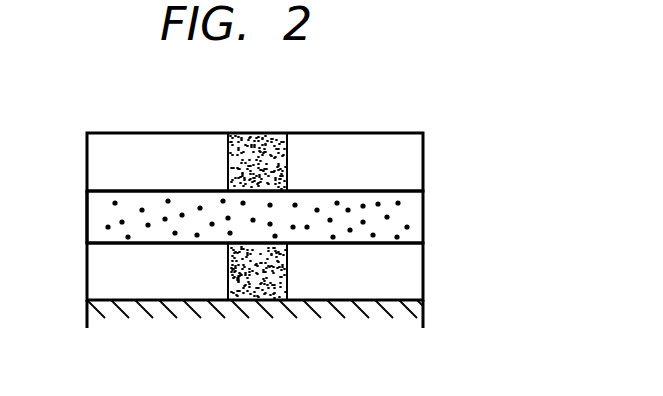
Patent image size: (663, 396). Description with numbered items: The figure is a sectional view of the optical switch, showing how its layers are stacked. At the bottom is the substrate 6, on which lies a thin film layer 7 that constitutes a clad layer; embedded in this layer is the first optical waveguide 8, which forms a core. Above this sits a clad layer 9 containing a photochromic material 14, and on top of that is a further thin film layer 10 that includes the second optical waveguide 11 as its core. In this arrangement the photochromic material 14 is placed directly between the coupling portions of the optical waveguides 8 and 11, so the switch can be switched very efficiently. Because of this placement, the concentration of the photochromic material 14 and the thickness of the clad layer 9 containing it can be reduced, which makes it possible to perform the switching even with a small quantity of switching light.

The substrate 6 is at (395, 308).
The thin film layer 7 is at (408, 278).
The first optical waveguide 8 is at (257, 283).
The clad layer 9 is at (413, 212).
The thin film layer 10 is at (413, 162).
The second optical waveguide 11 is at (259, 134).
The photochromic material 14 is at (100, 212).